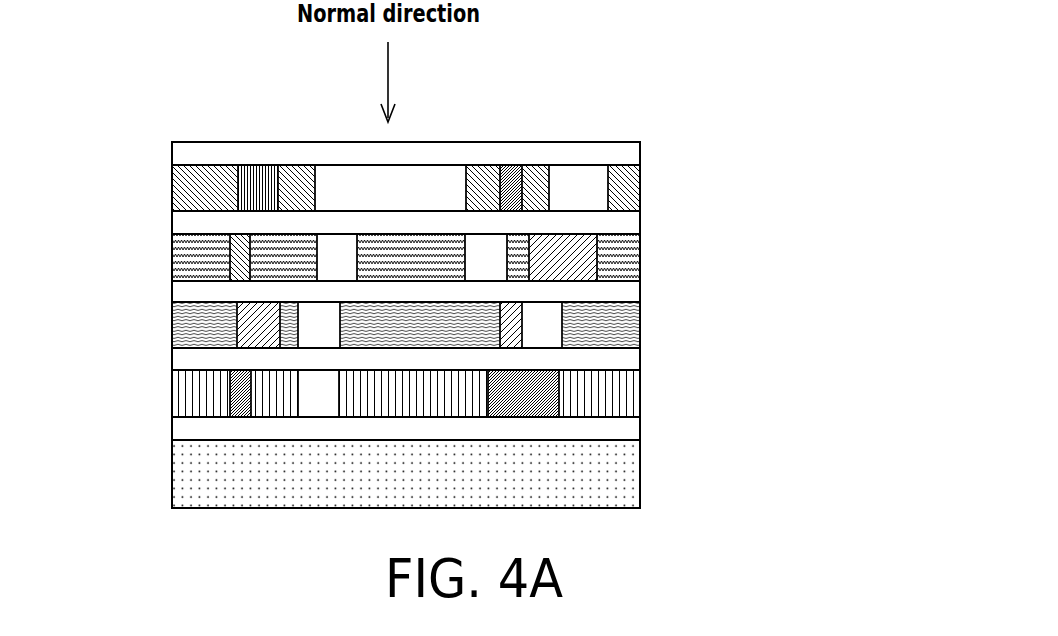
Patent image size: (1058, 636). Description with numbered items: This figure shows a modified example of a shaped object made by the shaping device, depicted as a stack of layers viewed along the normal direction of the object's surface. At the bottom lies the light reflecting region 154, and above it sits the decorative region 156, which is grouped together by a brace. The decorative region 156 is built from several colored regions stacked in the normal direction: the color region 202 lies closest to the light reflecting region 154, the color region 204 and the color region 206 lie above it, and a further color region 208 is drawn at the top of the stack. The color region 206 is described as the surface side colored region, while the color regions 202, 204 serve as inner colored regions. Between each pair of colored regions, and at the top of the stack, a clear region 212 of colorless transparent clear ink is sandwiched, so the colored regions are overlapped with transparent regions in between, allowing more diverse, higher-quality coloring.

The light reflecting region 154 is at (184, 474).
The decorative region 156 is at (828, 107).
The color region 202 is at (631, 398).
The color region 204 is at (640, 322).
The color region 206 is at (633, 262).
The fourth layer 208 is at (633, 180).
The clear region 212 is at (632, 146).